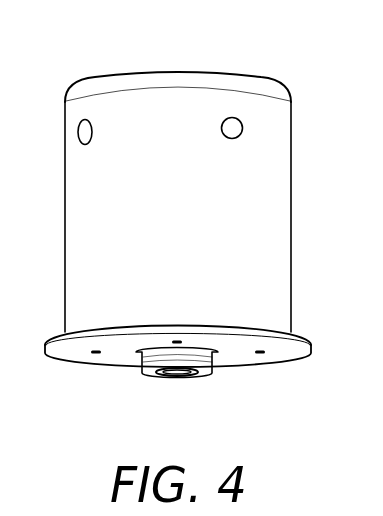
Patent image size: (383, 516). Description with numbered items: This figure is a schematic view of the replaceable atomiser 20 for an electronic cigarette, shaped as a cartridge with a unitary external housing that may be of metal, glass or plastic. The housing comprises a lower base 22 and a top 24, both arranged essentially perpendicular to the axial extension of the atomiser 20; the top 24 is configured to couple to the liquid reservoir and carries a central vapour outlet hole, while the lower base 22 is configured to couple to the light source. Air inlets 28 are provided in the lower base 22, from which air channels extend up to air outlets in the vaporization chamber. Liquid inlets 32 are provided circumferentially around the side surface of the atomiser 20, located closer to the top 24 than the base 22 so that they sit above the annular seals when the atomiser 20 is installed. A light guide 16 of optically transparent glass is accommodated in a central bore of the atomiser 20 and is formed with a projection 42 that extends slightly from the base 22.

The atomiser 20 is at (302, 67).
The top 24 is at (176, 72).
The liquid inlets 32 is at (79, 134).
The lower base 22 is at (72, 355).
The air inlets 28 is at (261, 355).
The light guide 16 is at (158, 357).
The projection 42 is at (178, 377).